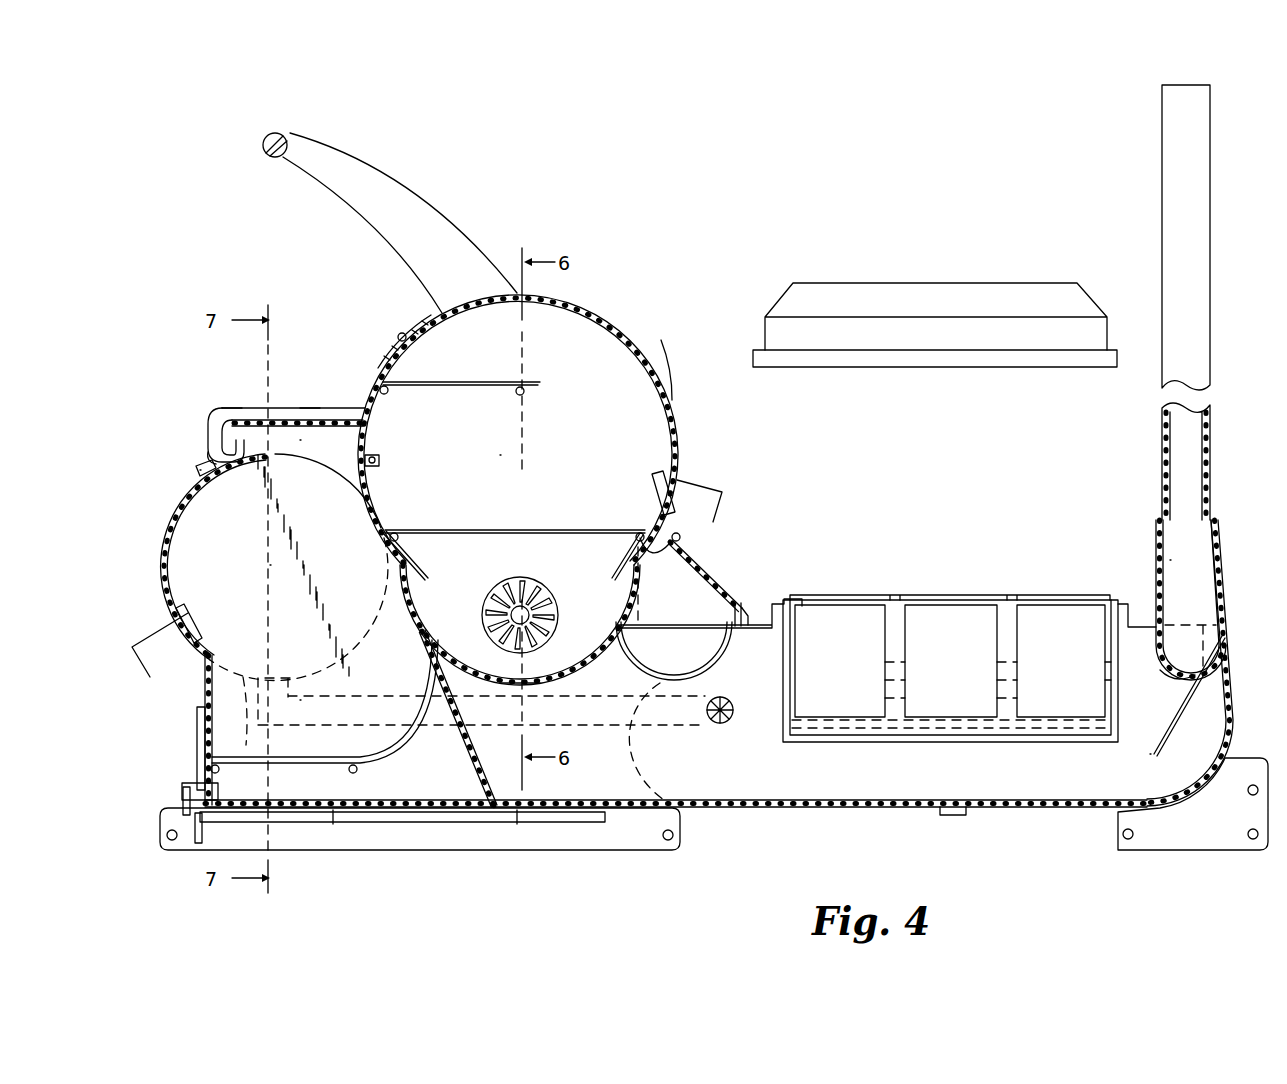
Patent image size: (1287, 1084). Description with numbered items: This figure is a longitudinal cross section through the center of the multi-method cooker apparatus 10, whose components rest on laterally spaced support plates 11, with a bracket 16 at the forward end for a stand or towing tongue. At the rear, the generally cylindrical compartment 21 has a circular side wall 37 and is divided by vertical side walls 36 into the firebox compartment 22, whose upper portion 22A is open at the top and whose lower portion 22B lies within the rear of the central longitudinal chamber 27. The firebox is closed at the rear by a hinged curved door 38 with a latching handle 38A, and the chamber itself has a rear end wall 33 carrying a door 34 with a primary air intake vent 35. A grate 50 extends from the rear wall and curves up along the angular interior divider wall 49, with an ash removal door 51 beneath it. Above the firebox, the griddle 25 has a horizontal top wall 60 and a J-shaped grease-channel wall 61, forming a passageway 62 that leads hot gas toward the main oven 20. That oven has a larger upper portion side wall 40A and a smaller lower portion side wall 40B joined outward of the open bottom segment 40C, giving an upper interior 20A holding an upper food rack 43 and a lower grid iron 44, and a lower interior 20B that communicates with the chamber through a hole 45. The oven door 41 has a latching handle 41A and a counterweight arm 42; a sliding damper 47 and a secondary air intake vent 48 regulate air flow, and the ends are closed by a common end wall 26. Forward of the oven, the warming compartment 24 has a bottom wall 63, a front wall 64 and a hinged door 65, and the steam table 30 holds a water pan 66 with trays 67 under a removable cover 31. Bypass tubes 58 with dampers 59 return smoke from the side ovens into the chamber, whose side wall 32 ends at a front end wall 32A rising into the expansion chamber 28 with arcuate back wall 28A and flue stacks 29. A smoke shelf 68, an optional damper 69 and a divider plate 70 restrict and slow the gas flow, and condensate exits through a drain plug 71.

The multi-method cooker apparatus 10 is at (690, 232).
The support plate 11 is at (604, 850).
The bracket 16 is at (1193, 804).
The main oven 20 is at (620, 302).
The upper portion of main oven interior 20A is at (537, 440).
The lower portion of main oven interior 20B is at (605, 585).
The generally cylindrical compartment 21 is at (158, 448).
The firebox compartment 22 is at (185, 560).
The upper portion of firebox compartment 22A is at (252, 542).
The lower portion of firebox compartment 22B is at (322, 706).
The warming compartment 24 is at (760, 546).
The griddle 25 is at (305, 390).
The common end wall 26 is at (215, 408).
The central longitudinal chamber 27 is at (798, 818).
The expansion chamber 28 is at (1152, 552).
The arcuate back wall 28A is at (1152, 580).
The flue or stack 29 is at (1160, 202).
The steam table 30 is at (986, 530).
The removable cover 31 is at (937, 293).
The side wall of longitudinal chamber 32 is at (846, 810).
The front end wall 32A is at (1200, 580).
The rear end wall 33 is at (204, 683).
The door 34 is at (196, 722).
The primary air intake vent 35 is at (196, 752).
The vertical side wall 36 is at (240, 440).
The circular side wall 37 is at (195, 468).
The hinged curved door 38 is at (175, 591).
The latching handle 38A is at (150, 632).
The upper portion side wall 40A is at (388, 342).
The lower portion side wall 40B is at (424, 622).
The open bottom segment 40C is at (610, 578).
The hinged curved door 41 is at (664, 356).
The latching handle 41A is at (695, 470).
The counterweight arm 42 is at (392, 166).
The upper food rack 43 is at (448, 380).
The lower grid iron 44 is at (436, 528).
The opening or hole 45 is at (518, 682).
The adjustable sliding damper 47 is at (380, 452).
The secondary air intake vent 48 is at (512, 585).
The interior divider wall 49 is at (478, 778).
The grate 50 is at (270, 766).
The ash removal door 51 is at (455, 800).
The bypass tube 58 is at (660, 746).
The adjustable damper 59 is at (728, 722).
The horizontal top wall 60 is at (318, 410).
The J-shaped vertical wall 61 is at (208, 442).
The passageway 62 is at (316, 438).
The bottom wall 63 is at (652, 612).
The front wall 64 is at (728, 612).
The hinged door 65 is at (704, 545).
The water pan 66 is at (908, 742).
The steam table tray or pan 67 is at (950, 661).
The smoke shelf 68 is at (1162, 676).
The adjustable damper 69 is at (1232, 660).
The divider plate 70 is at (1152, 748).
The drain hole and removable plug 71 is at (956, 818).